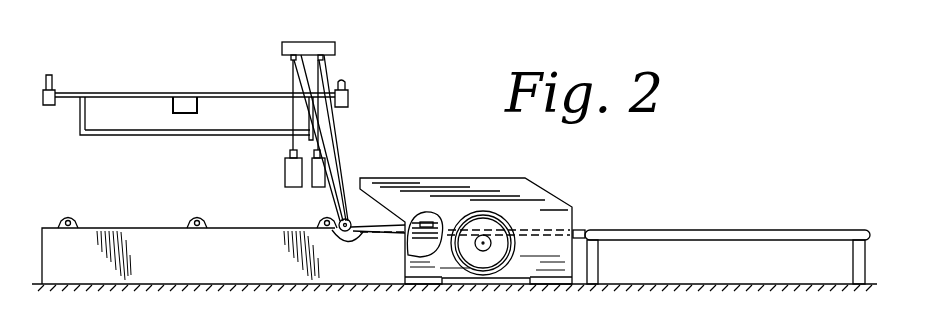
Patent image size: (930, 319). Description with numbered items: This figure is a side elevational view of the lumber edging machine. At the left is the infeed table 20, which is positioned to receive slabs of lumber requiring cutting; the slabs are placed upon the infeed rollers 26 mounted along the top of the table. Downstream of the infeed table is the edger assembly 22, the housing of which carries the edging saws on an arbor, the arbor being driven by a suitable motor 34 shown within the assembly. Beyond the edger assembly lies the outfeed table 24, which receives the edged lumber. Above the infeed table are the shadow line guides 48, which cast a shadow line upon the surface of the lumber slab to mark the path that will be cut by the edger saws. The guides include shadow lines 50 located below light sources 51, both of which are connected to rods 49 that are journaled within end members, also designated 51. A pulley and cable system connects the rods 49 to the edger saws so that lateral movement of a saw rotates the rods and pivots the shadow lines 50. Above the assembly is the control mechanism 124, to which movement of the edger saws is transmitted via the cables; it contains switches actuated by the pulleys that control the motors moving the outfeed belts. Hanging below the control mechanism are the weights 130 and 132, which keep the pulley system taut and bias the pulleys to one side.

The infeed table 20 is at (190, 268).
The edger assembly 22 is at (474, 210).
The outfeed table 24 is at (648, 235).
The infeed rollers 26 is at (75, 218).
The motor 34 is at (497, 224).
The shadow line guides 48 is at (211, 112).
The rods 49 is at (160, 97).
The shadow lines 50 is at (157, 133).
The light sources 51 is at (348, 97).
The control mechanism 124 is at (307, 42).
The weight 130 is at (289, 185).
The weight 132 is at (318, 187).